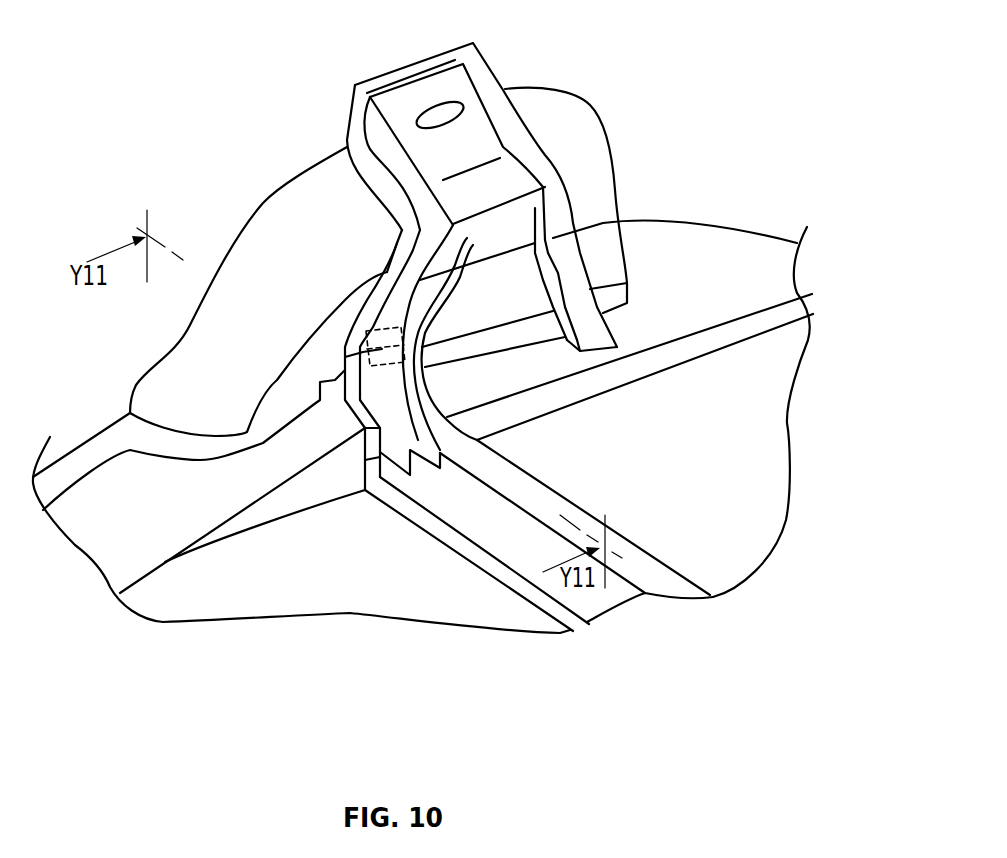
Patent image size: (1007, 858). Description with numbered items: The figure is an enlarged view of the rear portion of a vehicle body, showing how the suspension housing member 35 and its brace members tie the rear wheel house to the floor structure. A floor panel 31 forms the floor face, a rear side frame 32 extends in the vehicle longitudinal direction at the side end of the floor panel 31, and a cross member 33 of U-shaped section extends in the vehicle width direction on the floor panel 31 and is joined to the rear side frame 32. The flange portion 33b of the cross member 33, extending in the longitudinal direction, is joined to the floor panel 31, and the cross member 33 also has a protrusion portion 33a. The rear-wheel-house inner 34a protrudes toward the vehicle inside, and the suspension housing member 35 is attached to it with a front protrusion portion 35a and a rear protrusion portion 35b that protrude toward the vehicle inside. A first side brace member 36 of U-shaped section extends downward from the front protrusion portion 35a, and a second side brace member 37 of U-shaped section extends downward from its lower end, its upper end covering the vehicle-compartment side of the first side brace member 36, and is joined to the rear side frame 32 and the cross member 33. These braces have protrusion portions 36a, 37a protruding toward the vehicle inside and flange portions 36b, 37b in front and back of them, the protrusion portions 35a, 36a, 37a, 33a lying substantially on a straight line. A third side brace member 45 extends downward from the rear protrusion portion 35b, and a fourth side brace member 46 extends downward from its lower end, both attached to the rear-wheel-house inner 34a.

The floor panel 31 is at (427, 600).
The rear side frame 32 is at (757, 284).
The cross member 33 is at (665, 585).
The protrusion portion 33a is at (642, 562).
The flange portion 33b is at (578, 620).
The rear-wheel-house inner 34a is at (177, 343).
The suspension housing member 35 is at (390, 156).
The front protrusion portion 35a is at (414, 236).
The rear protrusion portion 35b is at (556, 205).
The first side brace member 36 is at (386, 315).
The protrusion portion 36a is at (393, 332).
The flange portion 36b is at (392, 281).
The second side brace member 37 is at (439, 425).
The protrusion portion 37a is at (437, 393).
The flange portion 37b is at (365, 425).
The third side brace member 45 is at (570, 252).
The fourth side brace member 46 is at (600, 332).